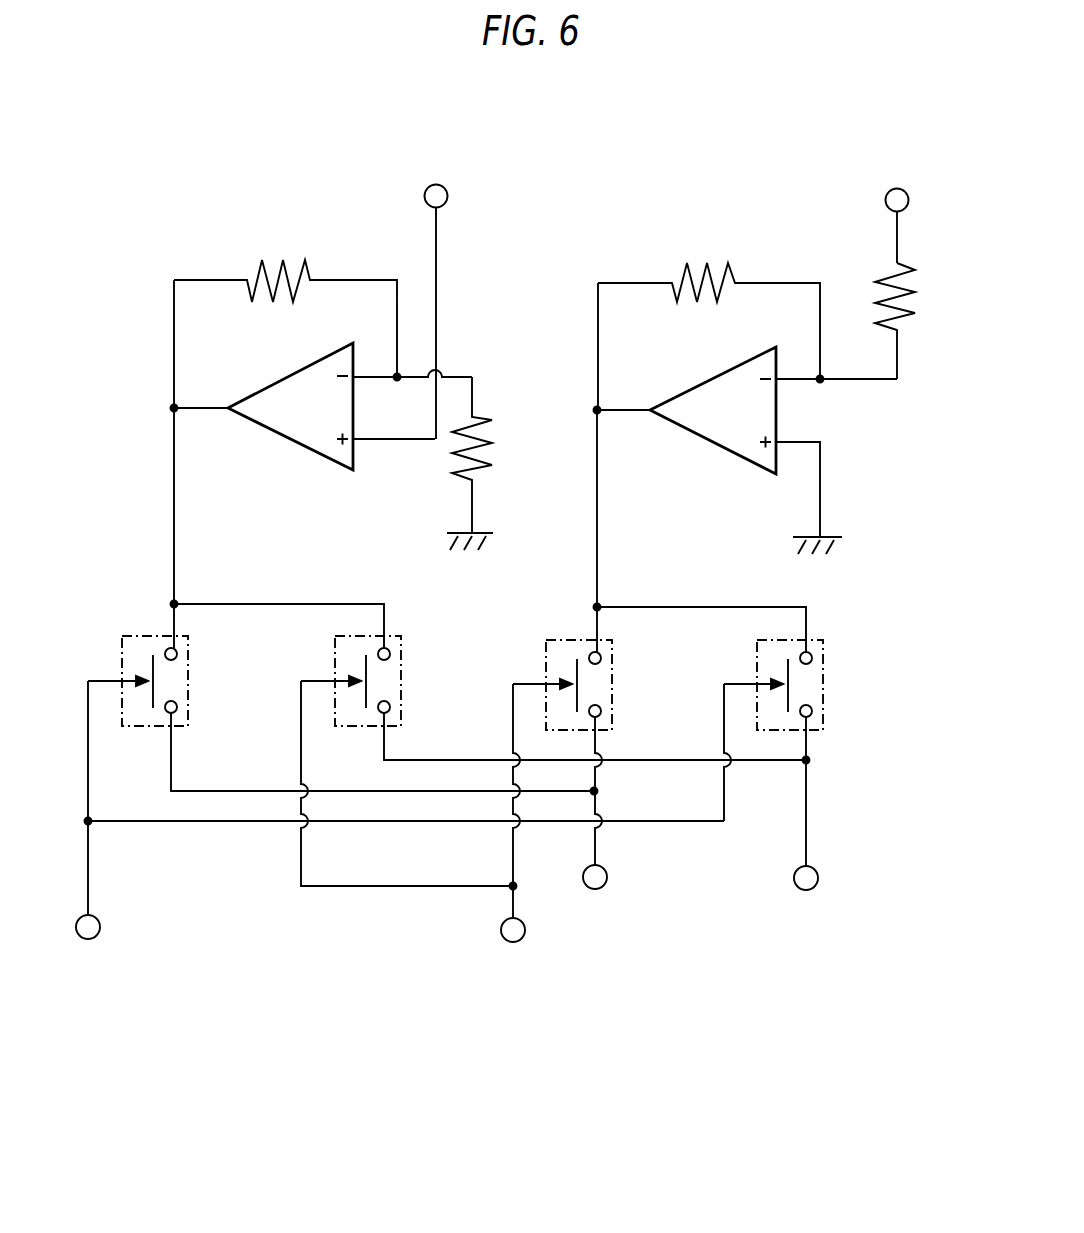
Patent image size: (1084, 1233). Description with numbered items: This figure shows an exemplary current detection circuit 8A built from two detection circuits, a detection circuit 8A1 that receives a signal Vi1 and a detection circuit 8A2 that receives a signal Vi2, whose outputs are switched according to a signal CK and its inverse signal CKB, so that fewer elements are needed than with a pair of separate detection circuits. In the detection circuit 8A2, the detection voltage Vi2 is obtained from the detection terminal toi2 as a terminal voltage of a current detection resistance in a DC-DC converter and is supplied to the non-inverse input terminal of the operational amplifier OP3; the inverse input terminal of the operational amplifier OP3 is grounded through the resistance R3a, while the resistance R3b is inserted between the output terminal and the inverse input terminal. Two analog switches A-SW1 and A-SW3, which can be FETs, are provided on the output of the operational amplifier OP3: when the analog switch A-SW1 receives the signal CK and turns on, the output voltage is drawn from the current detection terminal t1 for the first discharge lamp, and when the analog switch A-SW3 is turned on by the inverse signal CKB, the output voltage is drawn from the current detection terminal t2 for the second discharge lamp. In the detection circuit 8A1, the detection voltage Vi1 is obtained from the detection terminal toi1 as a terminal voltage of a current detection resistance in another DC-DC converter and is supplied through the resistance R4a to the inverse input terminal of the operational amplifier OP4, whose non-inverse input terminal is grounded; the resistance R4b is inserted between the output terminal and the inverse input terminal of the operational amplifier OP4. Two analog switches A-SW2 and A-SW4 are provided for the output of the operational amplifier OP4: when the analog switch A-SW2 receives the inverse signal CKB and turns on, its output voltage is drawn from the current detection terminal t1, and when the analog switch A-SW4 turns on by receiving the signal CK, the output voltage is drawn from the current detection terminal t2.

The current detection circuit 8A is at (765, 998).
The detection circuit 8A1 is at (667, 182).
The detection circuit 8A2 is at (244, 178).
The operational amplifier OP3 is at (293, 373).
The operational amplifier OP4 is at (713, 377).
The resistance R3a is at (490, 463).
The resistance R3b is at (285, 319).
The resistance R4a is at (916, 321).
The resistance R4b is at (709, 322).
The signal Vi1 is at (896, 210).
The signal Vi2 is at (436, 297).
The detection terminal toi1 is at (909, 198).
The detection terminal toi2 is at (448, 195).
The analog switch A-SW1 is at (343, 715).
The analog switch A-SW2 is at (598, 752).
The analog switch A-SW3 is at (555, 761).
The analog switch A-SW4 is at (809, 752).
The signal CK is at (88, 962).
The inverse signal CKB is at (513, 965).
The current detection terminal t1 is at (595, 893).
The current detection terminal t2 is at (806, 894).